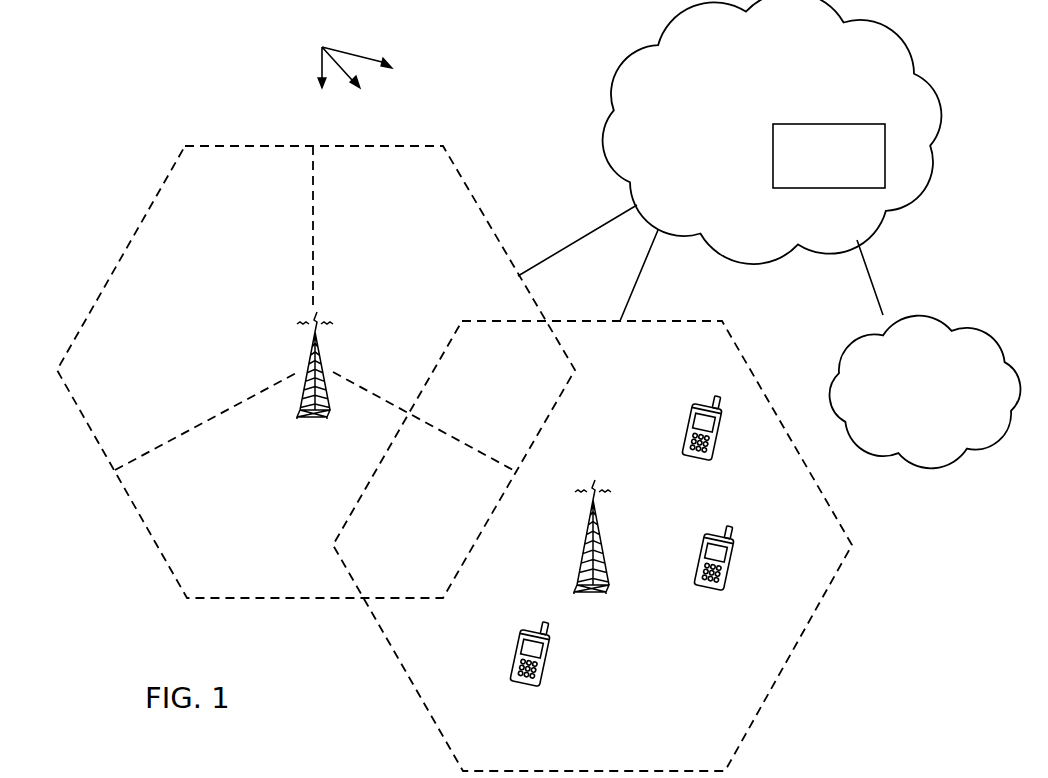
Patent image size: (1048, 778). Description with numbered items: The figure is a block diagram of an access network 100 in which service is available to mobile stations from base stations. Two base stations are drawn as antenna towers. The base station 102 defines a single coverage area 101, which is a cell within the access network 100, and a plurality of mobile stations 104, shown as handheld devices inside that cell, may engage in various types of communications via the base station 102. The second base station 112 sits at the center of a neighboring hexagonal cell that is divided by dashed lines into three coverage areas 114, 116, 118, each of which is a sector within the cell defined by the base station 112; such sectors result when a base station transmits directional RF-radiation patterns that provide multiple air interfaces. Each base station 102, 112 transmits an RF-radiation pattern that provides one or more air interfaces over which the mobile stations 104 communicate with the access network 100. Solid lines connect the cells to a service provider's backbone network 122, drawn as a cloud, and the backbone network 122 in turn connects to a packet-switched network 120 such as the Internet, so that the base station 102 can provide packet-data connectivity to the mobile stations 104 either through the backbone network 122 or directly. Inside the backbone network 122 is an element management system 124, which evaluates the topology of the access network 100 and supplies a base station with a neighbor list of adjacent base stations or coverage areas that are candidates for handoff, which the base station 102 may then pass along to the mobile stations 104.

The access network 100 is at (350, 54).
The coverage area 101 is at (792, 650).
The base station 102 is at (605, 590).
The mobile stations 104 is at (720, 447).
The base station 112 is at (326, 415).
The coverage area 114 is at (152, 202).
The coverage area 116 is at (141, 520).
The coverage area 118 is at (507, 253).
The packet-switched network 120 is at (962, 457).
The backbone network 122 is at (933, 165).
The element management system 124 is at (773, 152).